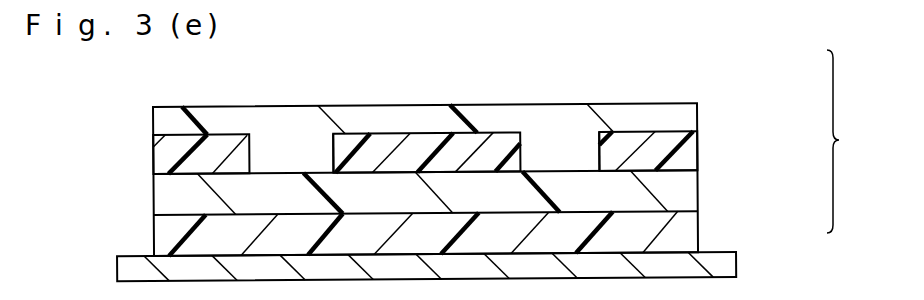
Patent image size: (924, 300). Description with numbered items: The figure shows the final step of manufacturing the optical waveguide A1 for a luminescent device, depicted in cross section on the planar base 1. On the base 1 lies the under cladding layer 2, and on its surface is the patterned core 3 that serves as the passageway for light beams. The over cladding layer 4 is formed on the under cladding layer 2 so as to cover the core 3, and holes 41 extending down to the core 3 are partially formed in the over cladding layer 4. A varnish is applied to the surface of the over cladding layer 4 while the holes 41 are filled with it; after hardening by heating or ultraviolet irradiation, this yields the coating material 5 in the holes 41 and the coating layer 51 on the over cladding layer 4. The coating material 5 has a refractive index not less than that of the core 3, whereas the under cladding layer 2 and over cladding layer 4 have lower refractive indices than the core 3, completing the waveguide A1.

The base 1 is at (733, 257).
The under cladding layer 2 is at (683, 223).
The core 3 is at (683, 195).
The over cladding layer 4 is at (683, 156).
The holes 41 is at (330, 148).
The coating material 5 is at (267, 150).
The coating layer 51 is at (683, 117).
The optical waveguide for a luminescent device A1 is at (516, 153).